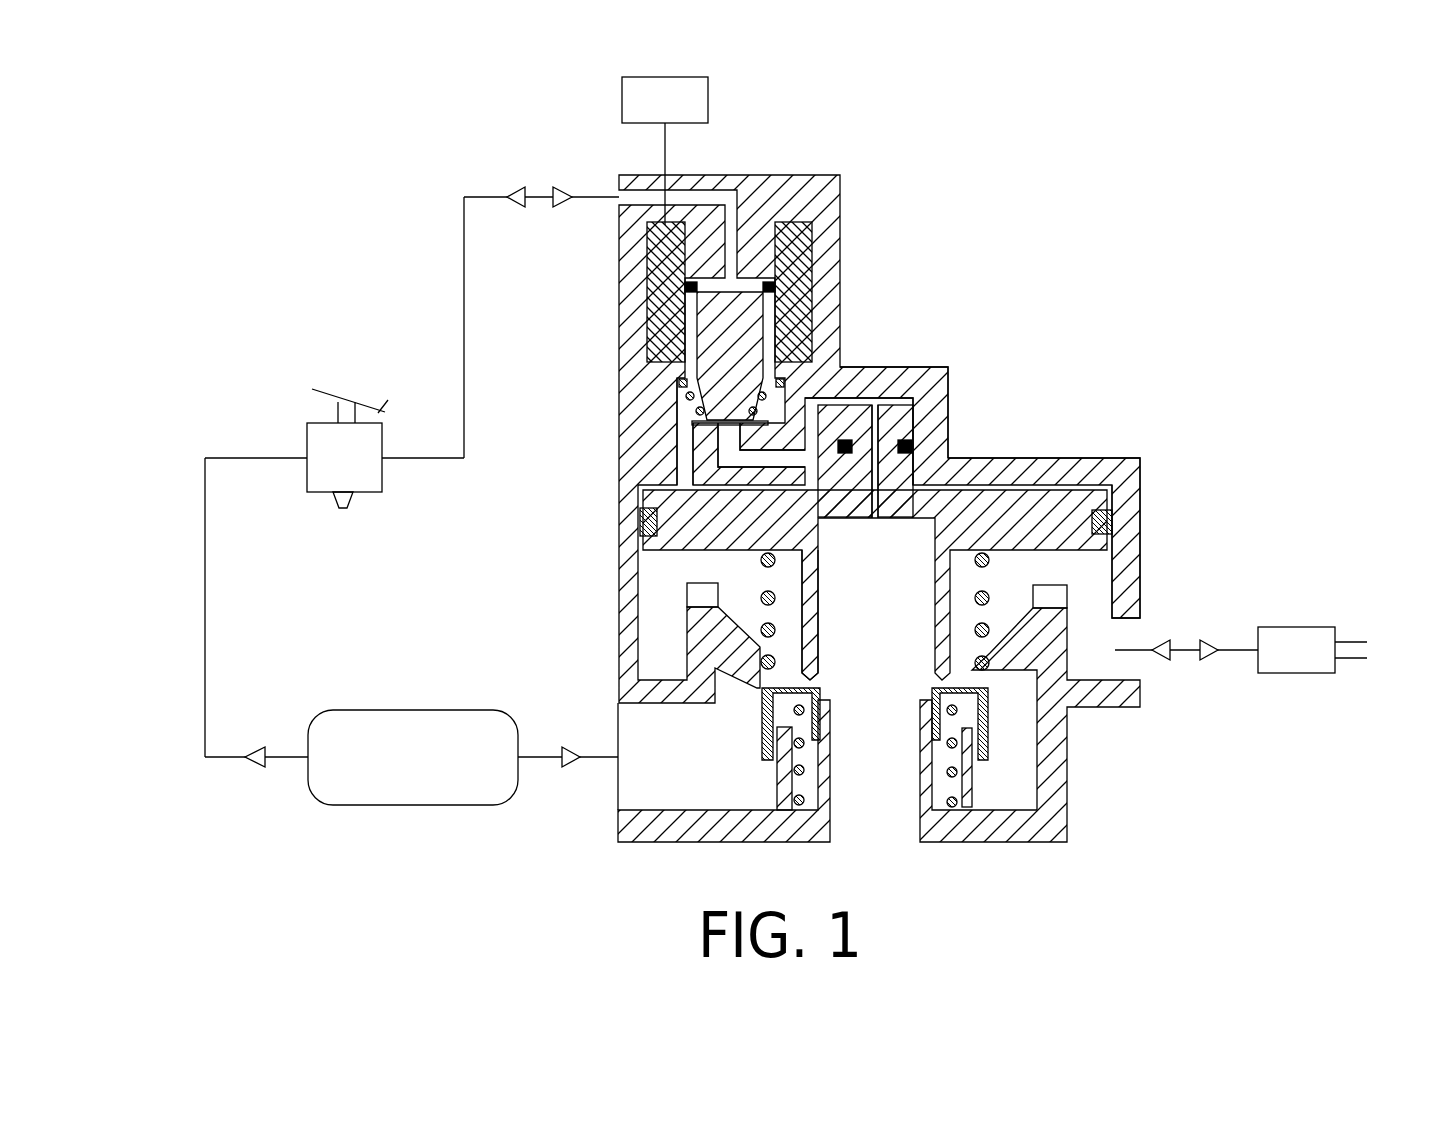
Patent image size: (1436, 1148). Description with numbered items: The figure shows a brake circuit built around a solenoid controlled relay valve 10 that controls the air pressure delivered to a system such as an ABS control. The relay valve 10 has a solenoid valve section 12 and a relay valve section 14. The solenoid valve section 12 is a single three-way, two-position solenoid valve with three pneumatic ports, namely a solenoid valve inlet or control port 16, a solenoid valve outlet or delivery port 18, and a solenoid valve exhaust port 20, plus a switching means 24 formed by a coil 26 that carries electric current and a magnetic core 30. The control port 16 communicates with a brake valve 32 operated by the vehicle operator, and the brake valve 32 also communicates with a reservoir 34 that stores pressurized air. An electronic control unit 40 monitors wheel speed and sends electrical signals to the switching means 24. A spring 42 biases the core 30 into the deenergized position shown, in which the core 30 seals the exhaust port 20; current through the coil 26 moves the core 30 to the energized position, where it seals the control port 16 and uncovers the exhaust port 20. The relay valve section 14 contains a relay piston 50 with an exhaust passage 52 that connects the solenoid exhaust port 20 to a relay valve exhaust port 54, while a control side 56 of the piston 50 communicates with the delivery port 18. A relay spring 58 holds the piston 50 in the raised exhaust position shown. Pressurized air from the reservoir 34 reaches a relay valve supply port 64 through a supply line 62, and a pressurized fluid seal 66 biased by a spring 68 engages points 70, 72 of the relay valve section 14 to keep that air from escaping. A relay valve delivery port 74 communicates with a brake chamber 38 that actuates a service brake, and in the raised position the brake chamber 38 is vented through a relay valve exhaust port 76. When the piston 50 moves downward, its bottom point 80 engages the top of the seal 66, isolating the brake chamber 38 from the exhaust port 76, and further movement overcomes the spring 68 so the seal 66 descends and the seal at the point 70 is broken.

The solenoid controlled relay valve 10 is at (1002, 253).
The solenoid valve section 12 is at (840, 190).
The relay valve section 14 is at (858, 373).
The solenoid valve inlet (control) port 16 is at (619, 196).
The solenoid valve outlet (delivery) port 18 is at (680, 460).
The solenoid valve exhaust (vent) port 20 is at (727, 447).
The switching means 24 is at (760, 245).
The coil 26 is at (805, 265).
The magnetic core 30 is at (750, 320).
The brake valve 32 is at (325, 435).
The reservoir 34 is at (380, 805).
The brake chamber 38 is at (1288, 627).
The electronic control unit 40 is at (685, 77).
The spring 42 is at (684, 393).
The relay piston 50 is at (950, 490).
The exhaust passage 52 is at (874, 518).
The relay valve exhaust port 54 is at (882, 405).
The control side 56 is at (1023, 490).
The relay spring 58 is at (768, 595).
The supply line 62 is at (568, 743).
The relay valve supply port 64 is at (617, 762).
The pressurized fluid seal 66 is at (935, 690).
The spring 68 is at (920, 760).
The point 70 is at (965, 680).
The point 72 is at (920, 705).
The relay valve delivery port 74 is at (1100, 667).
The relay valve exhaust port 76 is at (878, 815).
The bottom point 80 is at (812, 665).